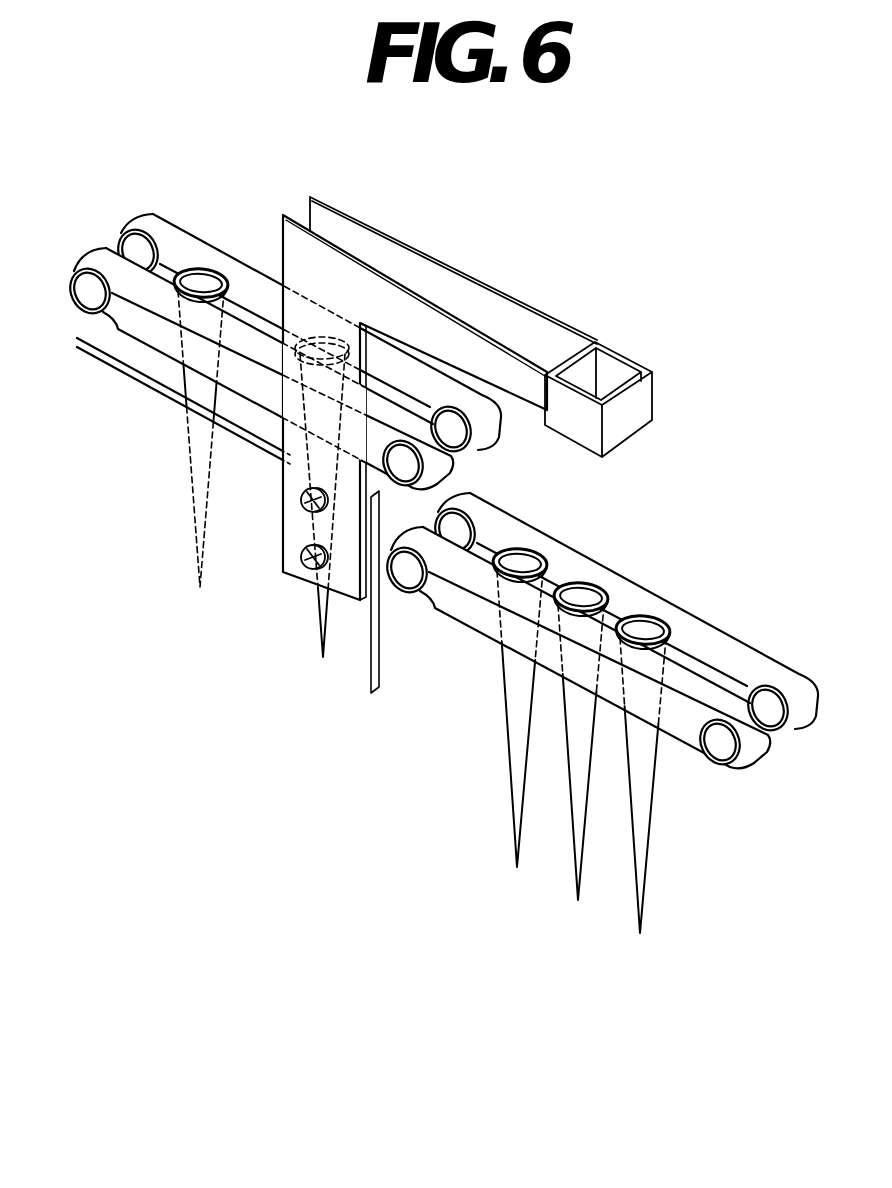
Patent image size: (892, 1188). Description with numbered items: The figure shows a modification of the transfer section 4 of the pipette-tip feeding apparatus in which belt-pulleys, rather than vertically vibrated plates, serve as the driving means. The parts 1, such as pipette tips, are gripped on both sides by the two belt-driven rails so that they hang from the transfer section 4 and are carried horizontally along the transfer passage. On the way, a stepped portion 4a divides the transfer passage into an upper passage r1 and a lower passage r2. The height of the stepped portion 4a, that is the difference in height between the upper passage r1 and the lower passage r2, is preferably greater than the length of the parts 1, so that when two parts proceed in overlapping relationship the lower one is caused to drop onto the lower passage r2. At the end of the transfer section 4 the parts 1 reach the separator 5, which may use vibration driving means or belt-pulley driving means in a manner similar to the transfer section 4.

The parts 1 is at (202, 283).
The transfer section 4 is at (440, 459).
The stepped portion 4a is at (442, 486).
The separator 5 is at (497, 363).
The upper passage r1 is at (245, 303).
The lower passage r2 is at (703, 663).